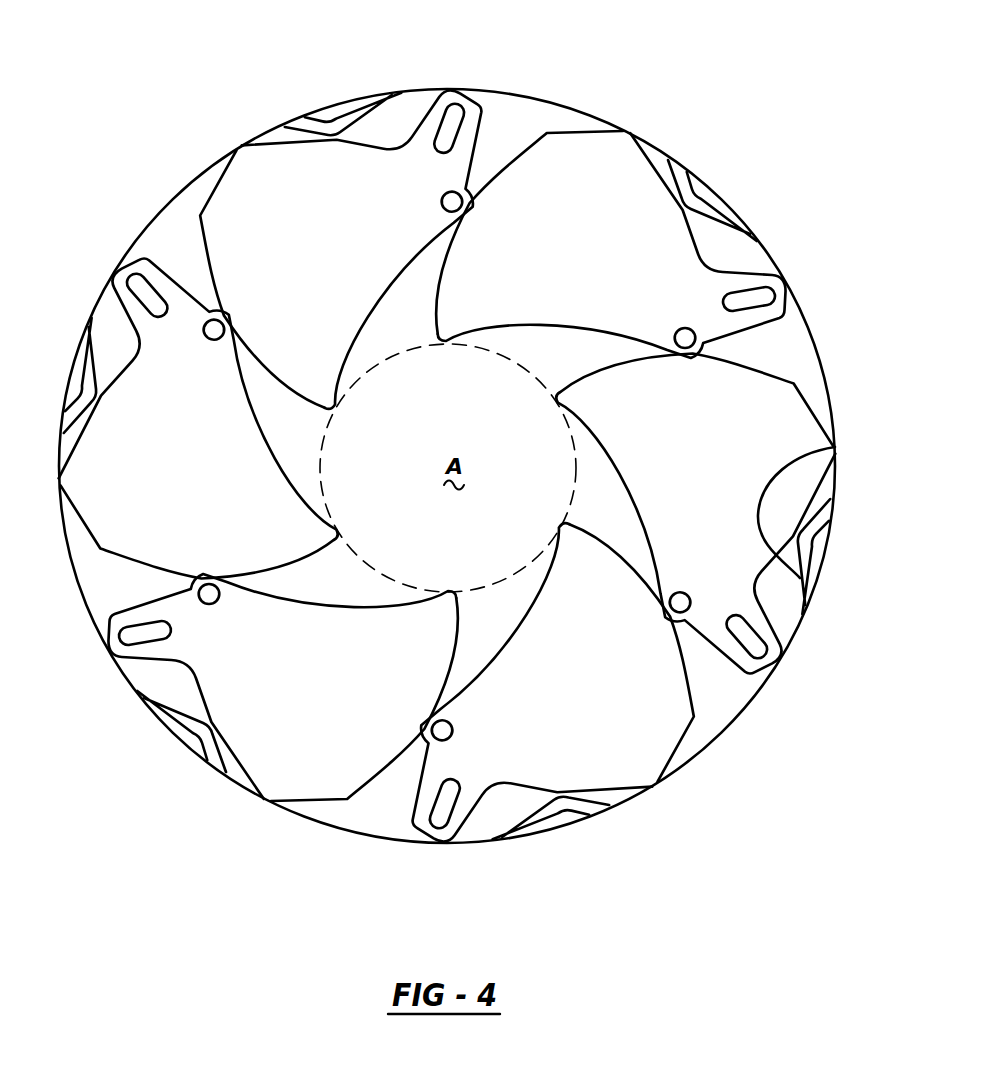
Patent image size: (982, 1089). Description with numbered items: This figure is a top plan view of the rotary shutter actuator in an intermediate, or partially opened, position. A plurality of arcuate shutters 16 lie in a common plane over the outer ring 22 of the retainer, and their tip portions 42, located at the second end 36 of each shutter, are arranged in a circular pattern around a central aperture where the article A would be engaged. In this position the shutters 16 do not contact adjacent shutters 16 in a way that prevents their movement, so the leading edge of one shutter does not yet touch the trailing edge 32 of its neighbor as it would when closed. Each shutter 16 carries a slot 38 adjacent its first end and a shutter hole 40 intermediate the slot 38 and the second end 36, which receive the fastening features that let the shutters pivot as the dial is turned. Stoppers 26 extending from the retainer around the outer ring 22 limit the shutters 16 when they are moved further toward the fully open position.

The shutter 16 is at (264, 220).
The outer ring 22 is at (515, 118).
The stopper 26 is at (838, 450).
The trailing edge 32 is at (200, 713).
The second end 36 is at (273, 801).
The slot 38 is at (456, 112).
The shutter hole 40 is at (462, 203).
The tip portion 42 is at (565, 538).